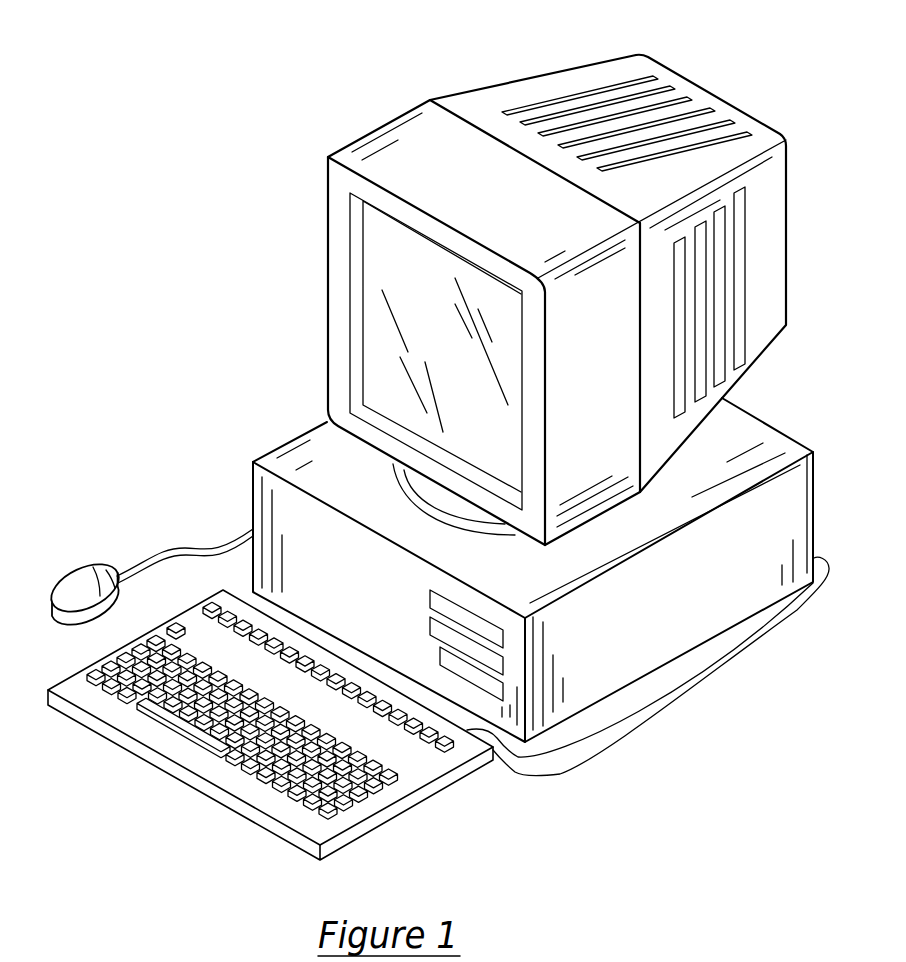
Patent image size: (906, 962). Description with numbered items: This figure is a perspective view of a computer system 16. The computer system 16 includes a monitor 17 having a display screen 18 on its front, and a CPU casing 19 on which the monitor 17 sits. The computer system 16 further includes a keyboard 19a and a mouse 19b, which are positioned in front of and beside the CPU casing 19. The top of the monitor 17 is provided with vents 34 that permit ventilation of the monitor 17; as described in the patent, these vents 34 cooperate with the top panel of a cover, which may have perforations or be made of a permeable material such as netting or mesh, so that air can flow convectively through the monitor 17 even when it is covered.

The computer system 16 is at (767, 94).
The monitor 17 is at (775, 288).
The display screen 18 is at (377, 313).
The vents 34 is at (541, 102).
The CPU casing 19 is at (663, 650).
The keyboard 19a is at (435, 790).
The mouse 19b is at (71, 580).